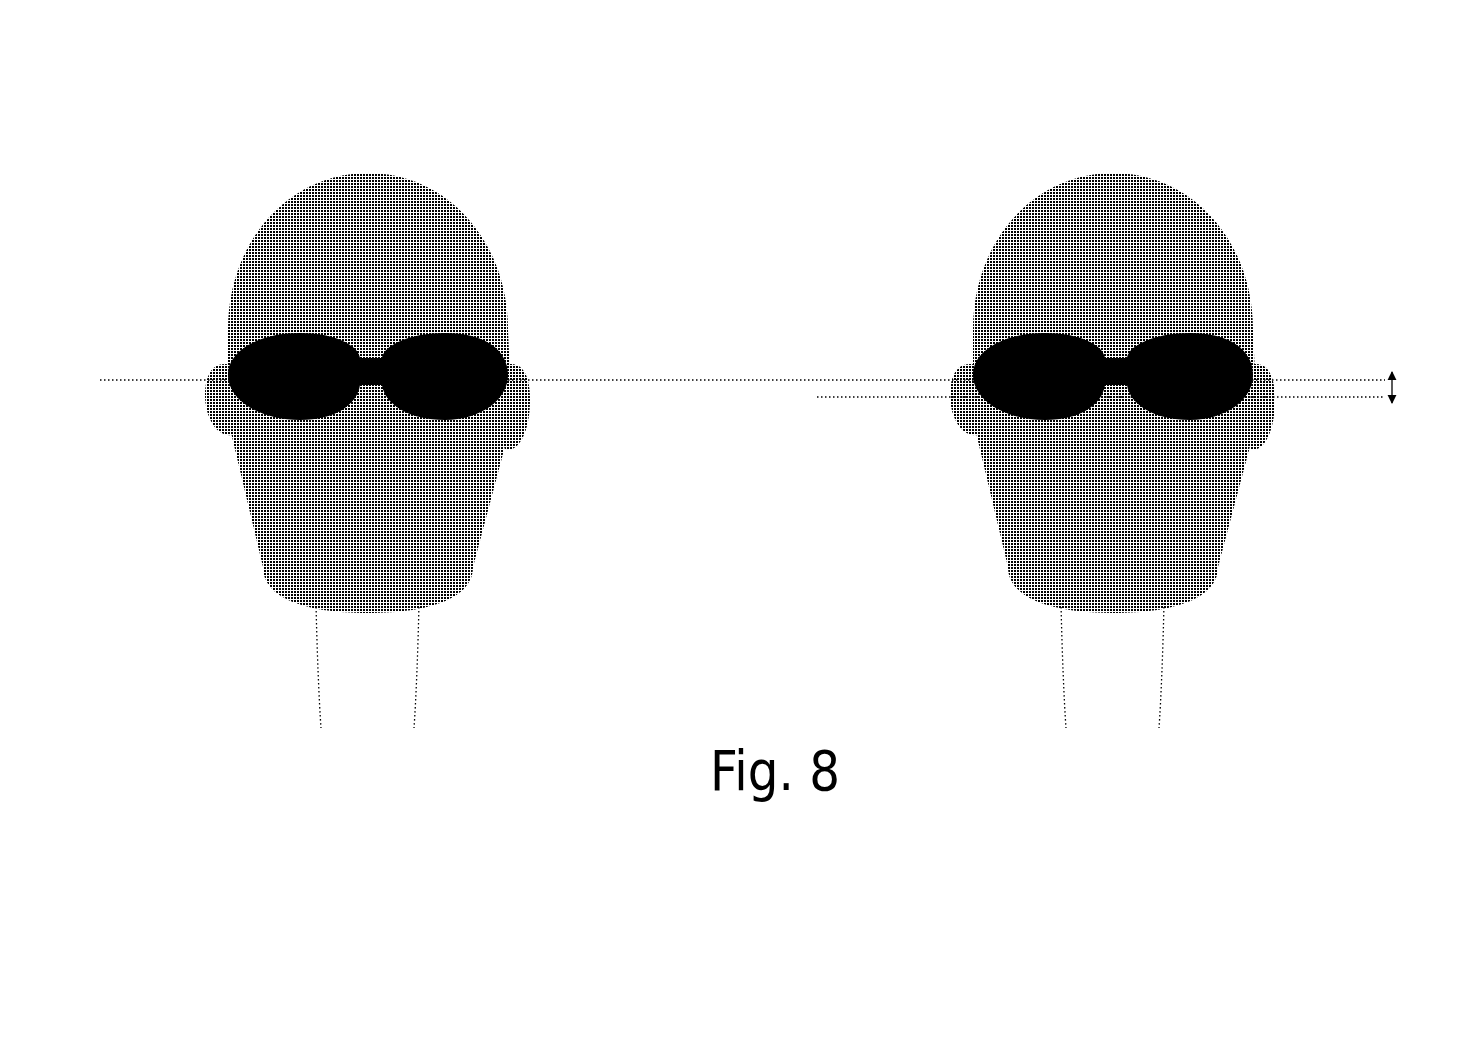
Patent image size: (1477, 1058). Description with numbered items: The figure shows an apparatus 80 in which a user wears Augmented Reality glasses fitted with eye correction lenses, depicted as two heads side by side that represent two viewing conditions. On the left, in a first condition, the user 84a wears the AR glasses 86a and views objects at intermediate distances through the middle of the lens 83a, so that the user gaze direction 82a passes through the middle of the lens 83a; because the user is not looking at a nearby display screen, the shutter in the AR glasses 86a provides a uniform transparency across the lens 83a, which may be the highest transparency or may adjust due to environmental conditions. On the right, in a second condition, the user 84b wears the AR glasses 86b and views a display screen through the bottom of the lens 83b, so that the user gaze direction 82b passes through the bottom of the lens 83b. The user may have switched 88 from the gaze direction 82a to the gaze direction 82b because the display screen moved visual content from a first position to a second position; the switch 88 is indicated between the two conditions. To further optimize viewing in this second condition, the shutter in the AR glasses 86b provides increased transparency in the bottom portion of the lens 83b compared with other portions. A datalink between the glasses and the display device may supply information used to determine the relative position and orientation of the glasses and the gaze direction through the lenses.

The apparatus 80 is at (216, 162).
The user gaze direction 82a is at (318, 683).
The user gaze direction 82b is at (1062, 670).
The lens 83a is at (270, 400).
The lens 83b is at (1010, 400).
The user 84a is at (290, 241).
The user 84b is at (1030, 241).
The AR glasses 86a is at (240, 365).
The AR glasses 86b is at (985, 365).
The switch of gaze direction 88 is at (785, 384).